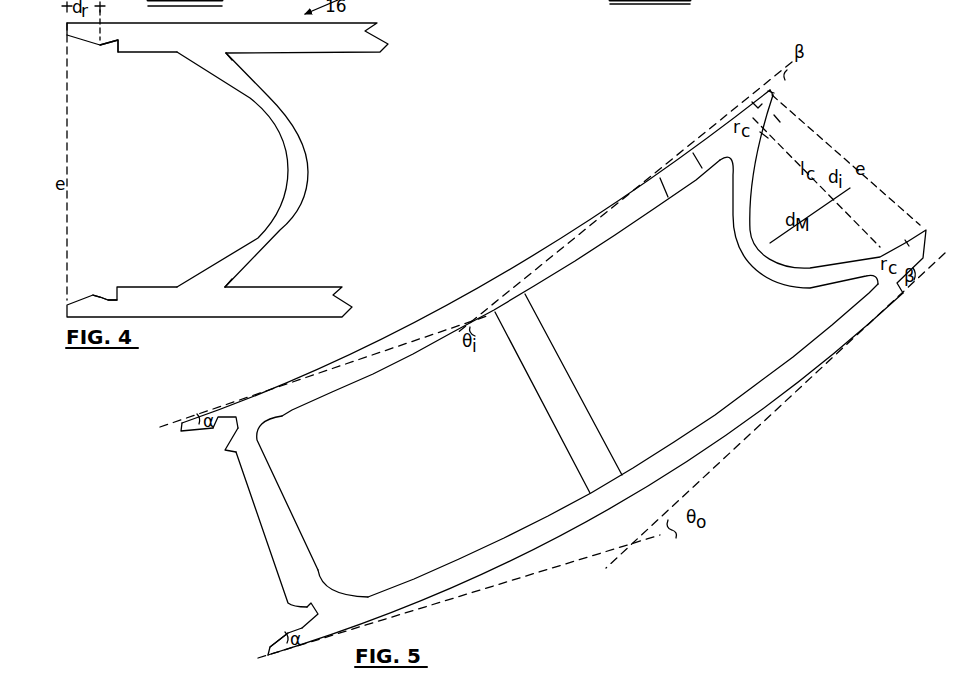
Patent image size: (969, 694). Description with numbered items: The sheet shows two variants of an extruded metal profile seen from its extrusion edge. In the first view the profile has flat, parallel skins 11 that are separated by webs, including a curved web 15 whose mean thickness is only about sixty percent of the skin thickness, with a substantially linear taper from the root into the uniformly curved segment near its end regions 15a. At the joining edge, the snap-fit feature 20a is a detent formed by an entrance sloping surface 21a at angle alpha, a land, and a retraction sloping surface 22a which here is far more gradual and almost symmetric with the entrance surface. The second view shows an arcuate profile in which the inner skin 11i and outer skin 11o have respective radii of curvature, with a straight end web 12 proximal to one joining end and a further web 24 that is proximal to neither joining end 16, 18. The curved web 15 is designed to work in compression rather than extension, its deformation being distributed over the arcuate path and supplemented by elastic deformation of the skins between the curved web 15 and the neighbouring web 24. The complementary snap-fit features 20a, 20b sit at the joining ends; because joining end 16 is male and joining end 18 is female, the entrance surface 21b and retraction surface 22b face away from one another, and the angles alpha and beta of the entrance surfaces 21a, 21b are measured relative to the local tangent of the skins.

In FIG. 4, the skins 11 is at (266, 45).
In FIG. 5, the inner skin 11i is at (530, 270).
In FIG. 5, the outer skin 11o is at (648, 463).
In FIG. 5, the web 12 is at (301, 558).
In FIG. 4, the curved web 15 is at (302, 151).
In FIG. 5, the curved web 15 is at (783, 274).
In FIG. 4, the end of curved portion 15a is at (236, 62).
In FIG. 5, the joining end 16 is at (852, 130).
In FIG. 5, the joining end 18 is at (192, 556).
In FIG. 5, the snap-fit feature 20a is at (222, 432).
In FIG. 5, the snap-fit feature 20b is at (782, 97).
In FIG. 4, the entrance sloping surface 21a is at (80, 291).
In FIG. 5, the entrance sloping surface 21a is at (278, 628).
In FIG. 5, the entrance sloping surface 21b is at (764, 88).
In FIG. 4, the retraction sloping surface 22a is at (104, 48).
In FIG. 5, the retraction sloping surface 22a is at (308, 618).
In FIG. 5, the retraction sloping surface 22b is at (755, 106).
In FIG. 5, the web 24 is at (548, 396).